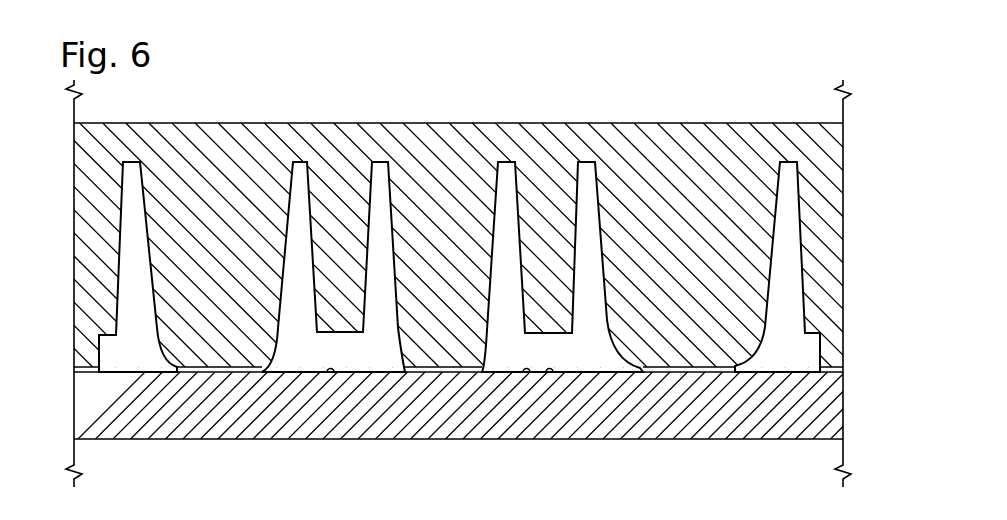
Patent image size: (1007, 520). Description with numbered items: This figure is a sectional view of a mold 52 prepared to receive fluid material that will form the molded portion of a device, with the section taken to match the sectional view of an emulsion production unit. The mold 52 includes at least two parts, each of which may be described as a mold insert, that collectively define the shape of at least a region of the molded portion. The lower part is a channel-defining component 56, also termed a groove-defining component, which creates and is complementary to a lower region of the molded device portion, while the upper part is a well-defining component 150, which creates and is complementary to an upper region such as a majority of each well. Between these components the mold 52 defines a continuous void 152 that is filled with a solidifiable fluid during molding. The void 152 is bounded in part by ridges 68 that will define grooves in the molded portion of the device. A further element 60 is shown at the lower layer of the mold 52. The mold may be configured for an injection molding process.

The mold 52 is at (361, 90).
The well-defining component 150 is at (234, 120).
The continuous void 152 is at (318, 358).
The ridges 68 is at (331, 367).
The substrate layer 60 is at (534, 441).
The channel-defining component 56 is at (243, 445).